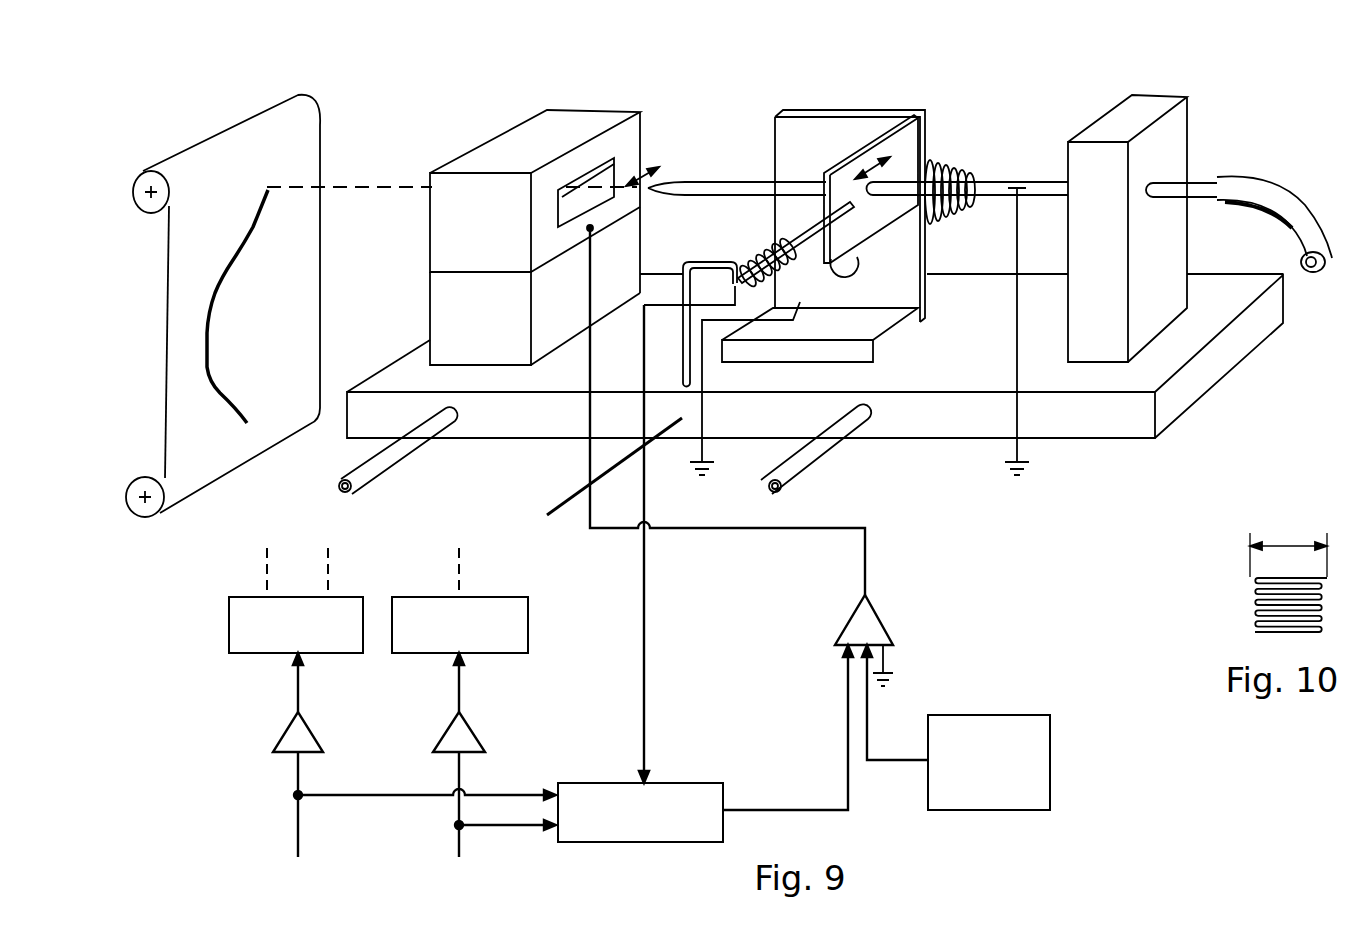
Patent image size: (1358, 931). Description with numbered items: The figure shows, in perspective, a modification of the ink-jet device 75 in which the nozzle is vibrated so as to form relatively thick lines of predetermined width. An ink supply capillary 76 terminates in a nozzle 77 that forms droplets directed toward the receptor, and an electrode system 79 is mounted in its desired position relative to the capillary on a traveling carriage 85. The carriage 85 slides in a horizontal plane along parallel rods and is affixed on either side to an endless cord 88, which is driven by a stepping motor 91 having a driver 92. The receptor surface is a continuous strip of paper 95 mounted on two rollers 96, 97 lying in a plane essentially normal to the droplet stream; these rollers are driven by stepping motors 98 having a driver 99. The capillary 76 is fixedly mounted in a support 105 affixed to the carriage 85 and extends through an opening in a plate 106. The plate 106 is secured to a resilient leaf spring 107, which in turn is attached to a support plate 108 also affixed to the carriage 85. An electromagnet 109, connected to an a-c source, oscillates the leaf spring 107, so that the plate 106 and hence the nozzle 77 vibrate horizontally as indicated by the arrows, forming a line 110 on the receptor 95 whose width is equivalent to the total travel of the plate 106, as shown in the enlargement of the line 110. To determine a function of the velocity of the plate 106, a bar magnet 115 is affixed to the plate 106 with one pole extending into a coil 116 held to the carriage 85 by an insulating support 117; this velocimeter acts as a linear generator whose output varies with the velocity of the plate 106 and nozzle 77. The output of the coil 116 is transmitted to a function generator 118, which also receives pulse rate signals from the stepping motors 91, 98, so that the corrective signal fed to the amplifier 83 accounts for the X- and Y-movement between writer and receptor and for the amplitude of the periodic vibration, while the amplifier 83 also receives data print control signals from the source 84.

In FIG. 9, the ink-jet device 75 is at (660, 110).
In FIG. 9, the ink supply capillary 76 is at (721, 185).
In FIG. 9, the nozzle 77 is at (650, 187).
In FIG. 9, the electrode system 79 is at (572, 122).
In FIG. 9, the amplifier 83 is at (858, 625).
In FIG. 9, the source of data print control signals 84 is at (1040, 730).
In FIG. 9, the traveling carriage 85 is at (1093, 425).
In FIG. 9, the endless cord 88 is at (558, 500).
In FIG. 9, the stepping motor 91 is at (518, 627).
In FIG. 9, the driver 92 is at (458, 738).
In FIG. 9, the paper 95 is at (305, 147).
In FIG. 9, the roller 96 is at (150, 508).
In FIG. 9, the roller 97 is at (141, 185).
In FIG. 9, the stepping motors 98 is at (242, 622).
In FIG. 9, the driver 99 is at (290, 737).
In FIG. 9, the support 105 is at (1172, 127).
In FIG. 9, the plate 106 is at (907, 148).
In FIG. 9, the leaf spring 107 is at (825, 127).
In FIG. 9, the support plate 108 is at (893, 337).
In FIG. 9, the electromagnet 109 is at (958, 163).
In FIG. 9, the line 110 is at (250, 233).
In FIG. 10, the line 110 is at (1255, 602).
In FIG. 9, the bar magnet 115 is at (807, 232).
In FIG. 9, the coil 116 is at (757, 250).
In FIG. 9, the insulating support 117 is at (682, 260).
In FIG. 9, the function generator 118 is at (710, 795).